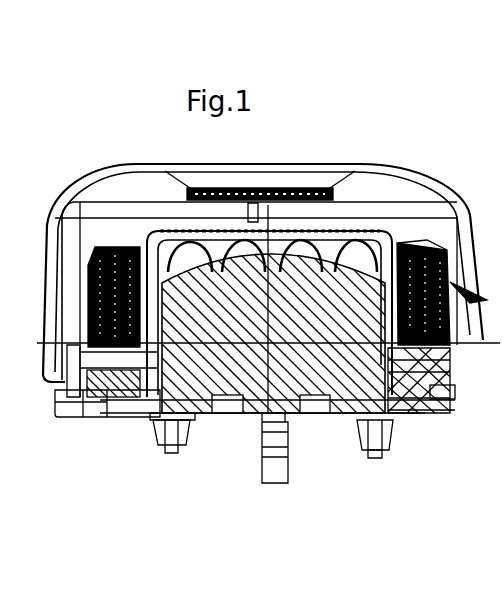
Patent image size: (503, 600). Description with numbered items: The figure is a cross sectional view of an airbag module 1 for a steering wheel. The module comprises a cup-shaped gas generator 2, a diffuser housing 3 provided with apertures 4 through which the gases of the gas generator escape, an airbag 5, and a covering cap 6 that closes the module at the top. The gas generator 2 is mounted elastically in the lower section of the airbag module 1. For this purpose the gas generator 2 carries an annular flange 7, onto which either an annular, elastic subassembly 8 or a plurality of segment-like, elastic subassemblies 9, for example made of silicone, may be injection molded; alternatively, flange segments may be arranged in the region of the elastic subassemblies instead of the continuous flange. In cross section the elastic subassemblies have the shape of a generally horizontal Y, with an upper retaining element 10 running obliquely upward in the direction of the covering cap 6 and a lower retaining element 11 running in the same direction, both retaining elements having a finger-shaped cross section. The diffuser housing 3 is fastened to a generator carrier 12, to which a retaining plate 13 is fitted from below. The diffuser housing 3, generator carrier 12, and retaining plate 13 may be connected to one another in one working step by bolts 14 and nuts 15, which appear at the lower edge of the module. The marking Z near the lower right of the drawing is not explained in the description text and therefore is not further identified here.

The airbag module 1 is at (375, 165).
The gas generator 2 is at (337, 377).
The diffuser housing 3 is at (388, 222).
The apertures 4 is at (345, 248).
The airbag 5 is at (427, 240).
The covering cap 6 is at (473, 237).
The annular flange 7 is at (147, 420).
The annular elastic subassembly 8 is at (373, 443).
The segment-like elastic subassemblies 9 is at (386, 443).
The upper retaining element 10 is at (437, 373).
The lower retaining element 11 is at (403, 417).
The generator carrier 12 is at (453, 390).
The retaining plate 13 is at (448, 405).
The bolts 14 is at (170, 447).
The nuts 15 is at (187, 433).
The center axis Z is at (413, 417).